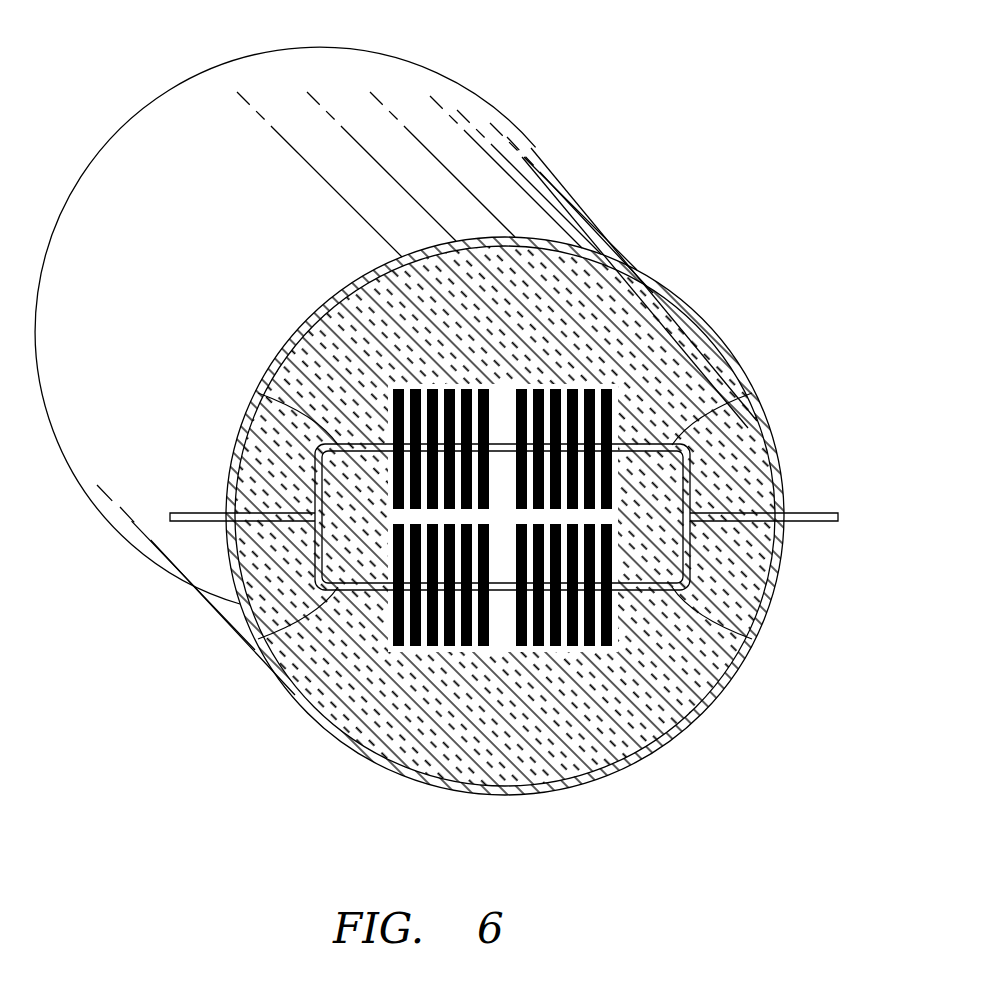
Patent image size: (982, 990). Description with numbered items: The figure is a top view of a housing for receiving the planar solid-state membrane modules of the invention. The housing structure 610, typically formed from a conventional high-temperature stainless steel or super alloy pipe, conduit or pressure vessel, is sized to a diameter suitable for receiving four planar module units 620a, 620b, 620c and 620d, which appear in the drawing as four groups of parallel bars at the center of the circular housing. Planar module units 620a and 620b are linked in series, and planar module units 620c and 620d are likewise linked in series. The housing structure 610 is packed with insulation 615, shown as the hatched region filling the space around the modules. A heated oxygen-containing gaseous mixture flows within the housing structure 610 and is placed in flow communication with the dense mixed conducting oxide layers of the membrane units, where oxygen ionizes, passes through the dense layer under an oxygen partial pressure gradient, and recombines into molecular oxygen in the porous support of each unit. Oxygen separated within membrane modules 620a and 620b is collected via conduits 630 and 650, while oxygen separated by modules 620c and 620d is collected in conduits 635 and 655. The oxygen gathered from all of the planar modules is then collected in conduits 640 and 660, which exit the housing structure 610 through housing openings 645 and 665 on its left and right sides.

The housing structure 610 is at (293, 341).
The insulation 615 is at (557, 300).
The planar module unit 620a is at (407, 387).
The planar module unit 620b is at (573, 387).
The planar module unit 620c is at (393, 650).
The planar module unit 620d is at (575, 648).
The conduit 630 is at (275, 400).
The conduit 635 is at (318, 612).
The conduit 640 is at (240, 472).
The housing opening 645 is at (227, 517).
The conduit 650 is at (740, 412).
The conduit 655 is at (722, 628).
The conduit 660 is at (737, 513).
The housing opening 665 is at (787, 521).